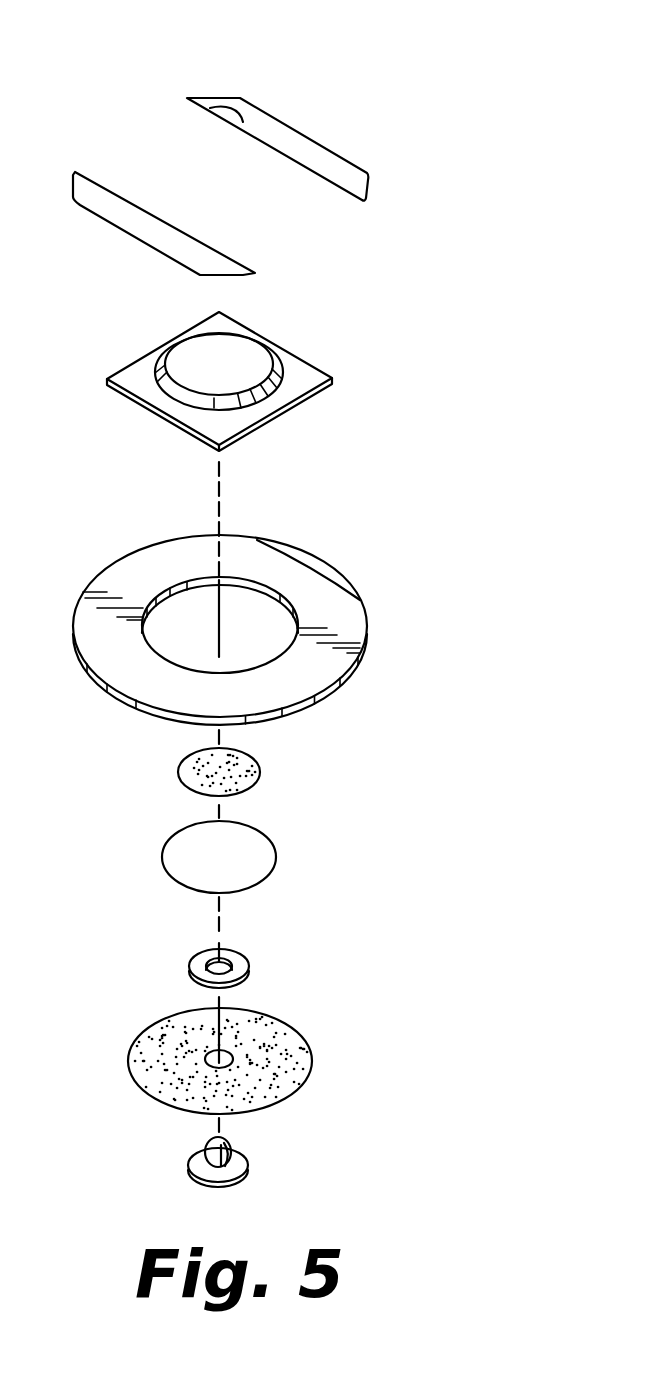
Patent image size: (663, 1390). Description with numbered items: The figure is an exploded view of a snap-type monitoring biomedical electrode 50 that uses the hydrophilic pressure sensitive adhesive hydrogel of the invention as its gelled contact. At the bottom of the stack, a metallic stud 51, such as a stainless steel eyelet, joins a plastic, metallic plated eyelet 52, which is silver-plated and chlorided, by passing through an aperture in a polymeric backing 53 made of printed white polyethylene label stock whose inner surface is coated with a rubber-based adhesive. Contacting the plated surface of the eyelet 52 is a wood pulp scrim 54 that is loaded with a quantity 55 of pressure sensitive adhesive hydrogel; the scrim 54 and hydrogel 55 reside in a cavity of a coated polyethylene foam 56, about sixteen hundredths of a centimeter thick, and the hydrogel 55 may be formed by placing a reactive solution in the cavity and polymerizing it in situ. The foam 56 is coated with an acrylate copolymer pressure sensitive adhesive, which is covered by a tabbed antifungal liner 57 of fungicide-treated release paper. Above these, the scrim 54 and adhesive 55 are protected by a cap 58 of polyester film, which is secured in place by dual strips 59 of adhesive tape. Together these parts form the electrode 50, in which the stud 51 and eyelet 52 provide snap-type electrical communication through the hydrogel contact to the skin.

The electrode 50 is at (377, 65).
The metallic stud 51 is at (238, 1162).
The plastic, metallic plated eyelet 52 is at (240, 960).
The polymeric backing 53 is at (312, 1063).
The wood pulp scrim 54 is at (277, 857).
The pressure sensitive adhesive hydrogel 55 is at (178, 770).
The coated polyethylene foam 56 is at (327, 700).
The tabbed antifungal liner 57 is at (350, 620).
The cap 58 is at (300, 375).
The dual strips of adhesive tape 59 is at (132, 212).